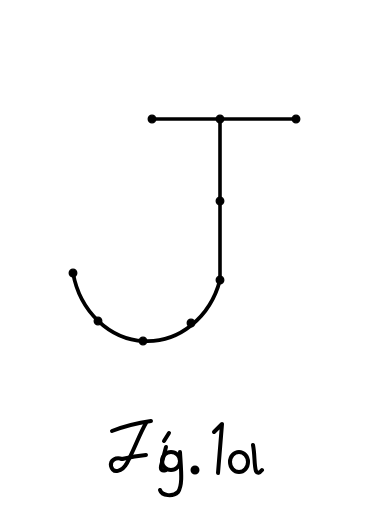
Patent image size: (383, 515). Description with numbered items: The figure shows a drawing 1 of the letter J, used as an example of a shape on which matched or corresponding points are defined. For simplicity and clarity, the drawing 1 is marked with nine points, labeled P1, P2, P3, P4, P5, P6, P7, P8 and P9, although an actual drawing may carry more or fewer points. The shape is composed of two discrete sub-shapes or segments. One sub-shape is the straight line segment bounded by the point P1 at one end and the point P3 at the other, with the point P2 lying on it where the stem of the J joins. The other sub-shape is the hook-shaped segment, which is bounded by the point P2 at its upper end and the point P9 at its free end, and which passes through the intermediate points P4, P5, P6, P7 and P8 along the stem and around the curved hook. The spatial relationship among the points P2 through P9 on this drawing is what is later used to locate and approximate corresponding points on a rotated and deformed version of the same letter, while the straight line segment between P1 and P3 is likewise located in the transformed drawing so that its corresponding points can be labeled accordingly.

The drawing 1 is at (197, 66).
The point P1 is at (150, 101).
The point P2 is at (219, 101).
The point P3 is at (294, 101).
The point P4 is at (237, 202).
The point P5 is at (234, 281).
The point P6 is at (200, 342).
The point P7 is at (146, 359).
The point P8 is at (87, 335).
The point P9 is at (56, 277).